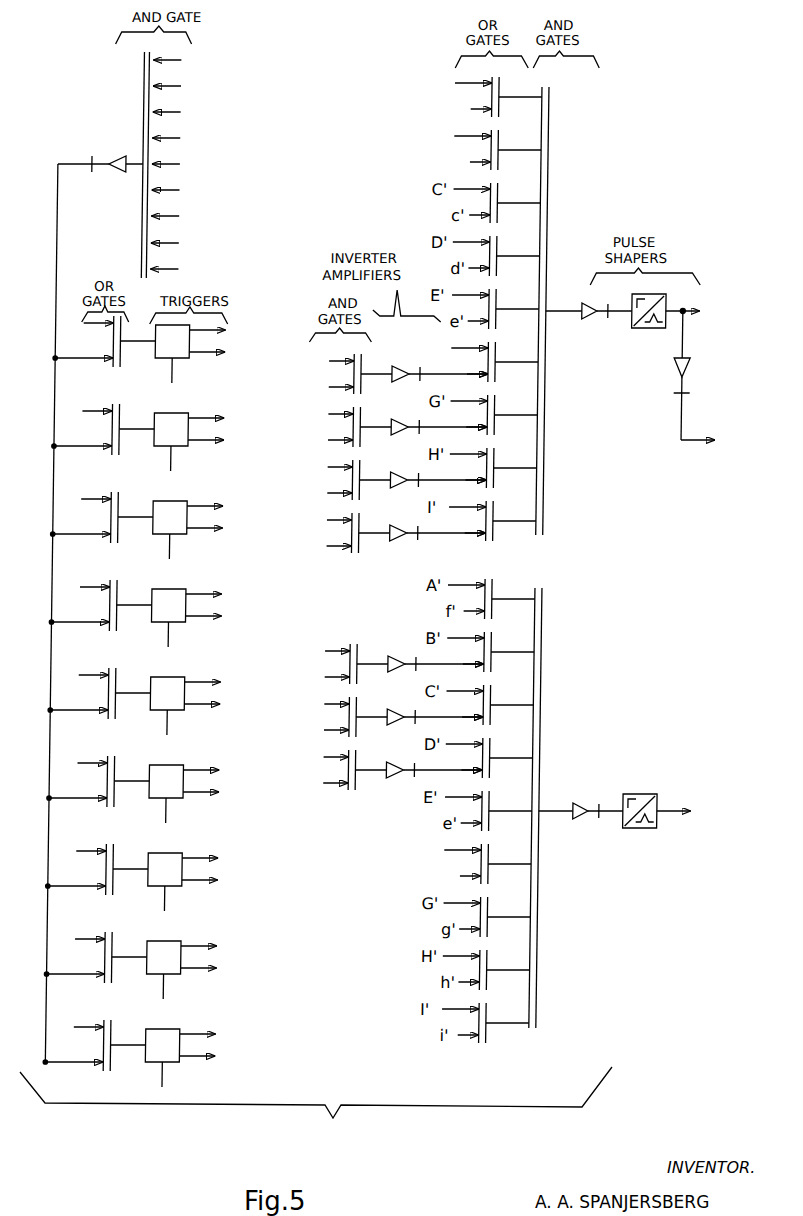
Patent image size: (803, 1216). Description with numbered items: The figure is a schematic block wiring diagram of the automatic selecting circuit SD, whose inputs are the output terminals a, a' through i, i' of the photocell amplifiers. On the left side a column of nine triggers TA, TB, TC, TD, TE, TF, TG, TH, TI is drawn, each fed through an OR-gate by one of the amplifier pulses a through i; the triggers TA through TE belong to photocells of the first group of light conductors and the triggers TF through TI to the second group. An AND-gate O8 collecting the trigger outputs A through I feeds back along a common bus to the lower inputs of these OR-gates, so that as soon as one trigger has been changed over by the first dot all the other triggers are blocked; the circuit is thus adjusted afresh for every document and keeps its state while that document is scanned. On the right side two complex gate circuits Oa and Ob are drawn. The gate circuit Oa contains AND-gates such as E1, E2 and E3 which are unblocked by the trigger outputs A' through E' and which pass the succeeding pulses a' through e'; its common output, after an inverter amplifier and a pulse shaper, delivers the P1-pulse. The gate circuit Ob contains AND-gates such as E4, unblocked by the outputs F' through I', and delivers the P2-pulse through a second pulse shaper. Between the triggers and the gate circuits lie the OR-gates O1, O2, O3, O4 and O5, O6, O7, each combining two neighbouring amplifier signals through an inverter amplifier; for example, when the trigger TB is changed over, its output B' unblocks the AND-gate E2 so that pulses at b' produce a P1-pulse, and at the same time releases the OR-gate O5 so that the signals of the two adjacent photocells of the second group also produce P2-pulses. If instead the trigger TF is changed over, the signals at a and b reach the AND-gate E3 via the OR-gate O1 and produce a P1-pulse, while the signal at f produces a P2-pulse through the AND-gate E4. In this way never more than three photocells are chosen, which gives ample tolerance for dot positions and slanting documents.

The AND gate O8 is at (133, 106).
The complex gate circuit Oa is at (573, 136).
The complex gate circuit Ob is at (574, 639).
The OR-gate O1 is at (365, 371).
The AND gate with inverter amplifier O2 is at (365, 424).
The AND gate with inverter amplifier O3 is at (365, 477).
The AND gate with inverter amplifier O4 is at (365, 530).
The OR-gate O5 is at (365, 661).
The AND gate with inverter amplifier O6 is at (365, 714).
The AND gate with inverter amplifier O7 is at (365, 767).
The OR gate E1 is at (497, 97).
The AND-gate E2 is at (497, 150).
The AND-gate E3 is at (497, 362).
The AND-gate E4 is at (497, 864).
The trigger TA is at (149, 348).
The trigger TB is at (147, 436).
The trigger TC is at (146, 524).
The trigger TD is at (146, 612).
The trigger TE is at (144, 700).
The trigger TF is at (141, 788).
The trigger TG is at (142, 876).
The trigger TH is at (141, 964).
The trigger TI is at (136, 1052).
The P1-pulse P1 is at (648, 372).
The P2-pulse P2 is at (627, 811).
The automatic selecting circuit SD is at (316, 1103).